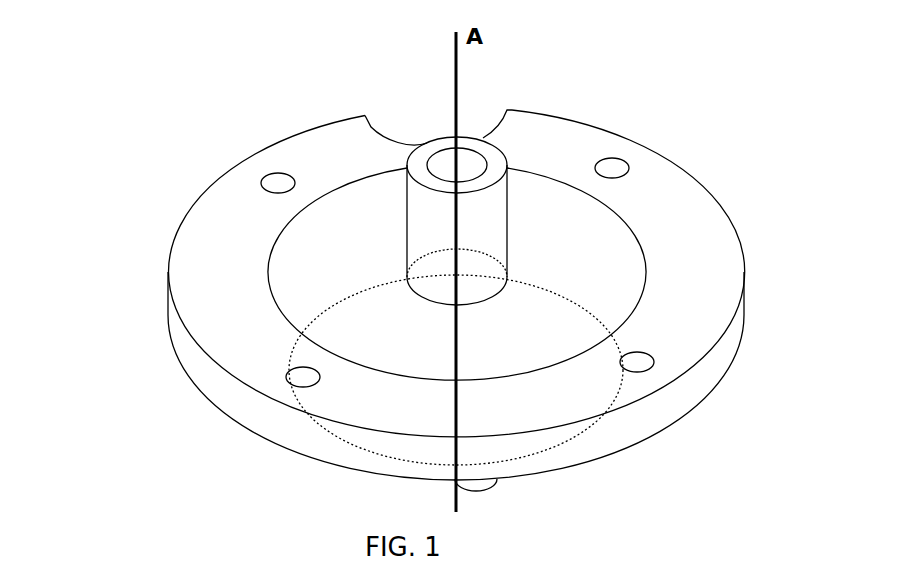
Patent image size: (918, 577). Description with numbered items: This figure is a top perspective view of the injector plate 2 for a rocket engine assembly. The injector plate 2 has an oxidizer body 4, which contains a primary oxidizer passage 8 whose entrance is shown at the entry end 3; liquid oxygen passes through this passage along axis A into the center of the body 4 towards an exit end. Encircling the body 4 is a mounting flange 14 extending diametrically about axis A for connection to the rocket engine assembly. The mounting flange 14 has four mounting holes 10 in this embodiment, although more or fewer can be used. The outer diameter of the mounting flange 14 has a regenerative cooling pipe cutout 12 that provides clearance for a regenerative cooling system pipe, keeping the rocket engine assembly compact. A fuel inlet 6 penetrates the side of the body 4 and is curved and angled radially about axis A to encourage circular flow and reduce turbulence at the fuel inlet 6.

The injector plate 2 is at (642, 127).
The entry end 3 is at (468, 163).
The oxidizer body 4 is at (483, 287).
The fuel inlet 6 is at (483, 488).
The primary oxidizer passage 8 is at (447, 165).
The mounting holes 10 is at (268, 178).
The regenerative cooling pipe cutout 12 is at (461, 156).
The mounting flange 14 is at (217, 278).